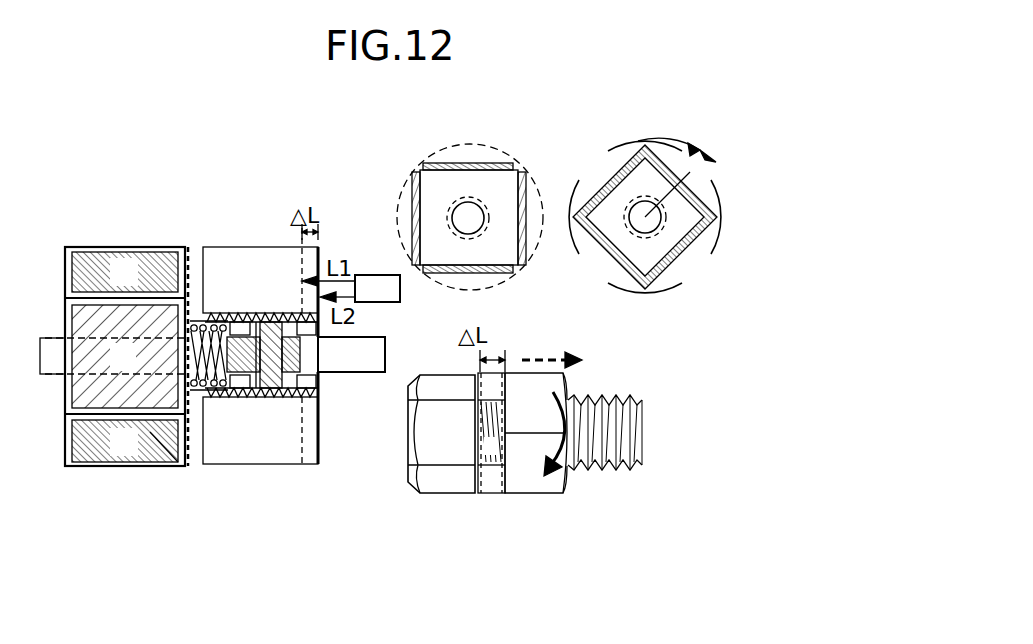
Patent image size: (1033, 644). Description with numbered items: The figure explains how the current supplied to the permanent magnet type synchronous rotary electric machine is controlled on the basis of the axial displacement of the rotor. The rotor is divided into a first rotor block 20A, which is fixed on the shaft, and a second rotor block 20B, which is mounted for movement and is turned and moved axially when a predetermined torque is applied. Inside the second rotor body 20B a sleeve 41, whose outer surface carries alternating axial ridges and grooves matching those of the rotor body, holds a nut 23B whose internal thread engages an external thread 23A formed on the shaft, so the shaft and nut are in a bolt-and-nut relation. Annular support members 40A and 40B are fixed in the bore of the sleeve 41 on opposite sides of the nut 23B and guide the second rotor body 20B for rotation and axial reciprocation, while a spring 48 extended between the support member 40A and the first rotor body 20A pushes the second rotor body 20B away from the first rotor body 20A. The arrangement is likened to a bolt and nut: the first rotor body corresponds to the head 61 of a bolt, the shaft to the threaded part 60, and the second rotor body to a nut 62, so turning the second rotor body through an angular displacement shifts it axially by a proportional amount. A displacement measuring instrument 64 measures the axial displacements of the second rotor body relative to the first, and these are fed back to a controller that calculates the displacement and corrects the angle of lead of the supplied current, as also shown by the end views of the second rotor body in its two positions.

The first rotor block 20A is at (183, 248).
The second rotor block 20B is at (225, 247).
The external thread 23A is at (240, 398).
The nut 23B is at (272, 320).
The support member 40A is at (192, 398).
The support member 40B is at (308, 388).
The sleeve 41 is at (258, 322).
The spring 48 is at (165, 437).
The threaded part of the bolt 60 is at (633, 450).
The head of the bolt 61 is at (427, 495).
The nut 62 is at (575, 525).
The displacement measuring instrument 64 is at (380, 283).